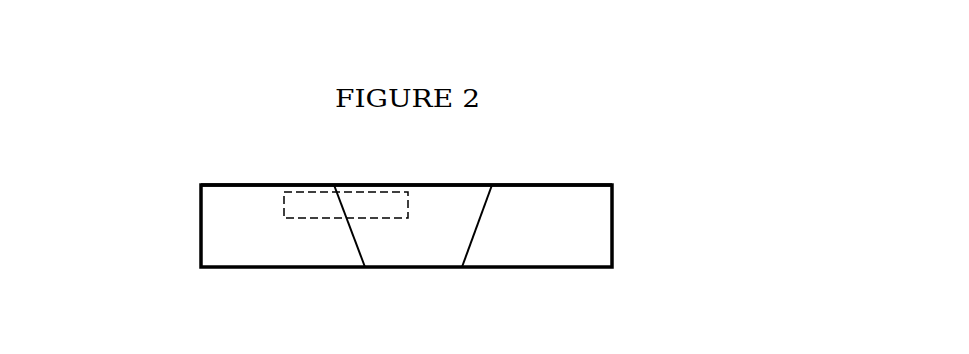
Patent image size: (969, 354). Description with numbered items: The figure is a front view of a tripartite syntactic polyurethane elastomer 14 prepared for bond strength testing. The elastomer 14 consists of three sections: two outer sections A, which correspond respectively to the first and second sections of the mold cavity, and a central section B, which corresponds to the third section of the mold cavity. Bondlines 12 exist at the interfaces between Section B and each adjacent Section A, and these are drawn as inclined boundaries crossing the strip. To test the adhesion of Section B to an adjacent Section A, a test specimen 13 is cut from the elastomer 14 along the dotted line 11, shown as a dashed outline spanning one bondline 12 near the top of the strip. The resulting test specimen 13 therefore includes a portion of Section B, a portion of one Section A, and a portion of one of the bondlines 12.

The dotted line 11 is at (283, 206).
The bondlines 12 is at (357, 247).
The test specimen 13 is at (378, 205).
The syntactic polyurethane elastomer 14 is at (166, 226).